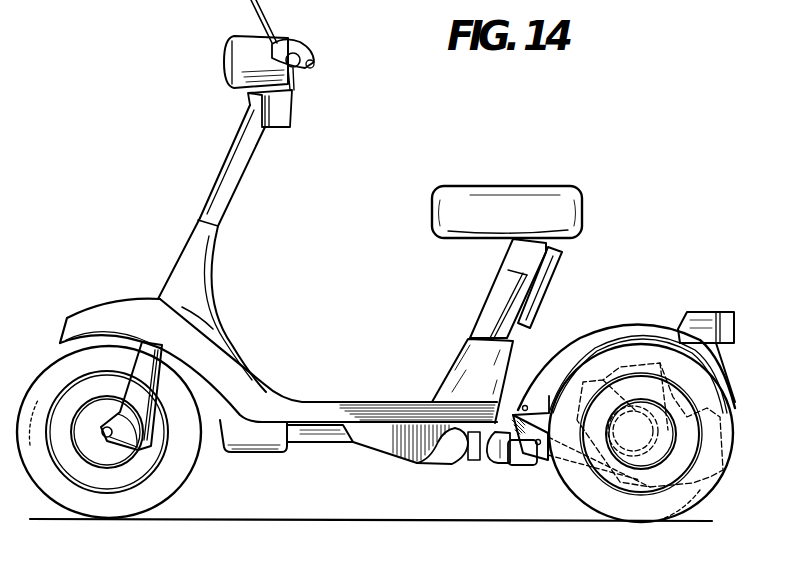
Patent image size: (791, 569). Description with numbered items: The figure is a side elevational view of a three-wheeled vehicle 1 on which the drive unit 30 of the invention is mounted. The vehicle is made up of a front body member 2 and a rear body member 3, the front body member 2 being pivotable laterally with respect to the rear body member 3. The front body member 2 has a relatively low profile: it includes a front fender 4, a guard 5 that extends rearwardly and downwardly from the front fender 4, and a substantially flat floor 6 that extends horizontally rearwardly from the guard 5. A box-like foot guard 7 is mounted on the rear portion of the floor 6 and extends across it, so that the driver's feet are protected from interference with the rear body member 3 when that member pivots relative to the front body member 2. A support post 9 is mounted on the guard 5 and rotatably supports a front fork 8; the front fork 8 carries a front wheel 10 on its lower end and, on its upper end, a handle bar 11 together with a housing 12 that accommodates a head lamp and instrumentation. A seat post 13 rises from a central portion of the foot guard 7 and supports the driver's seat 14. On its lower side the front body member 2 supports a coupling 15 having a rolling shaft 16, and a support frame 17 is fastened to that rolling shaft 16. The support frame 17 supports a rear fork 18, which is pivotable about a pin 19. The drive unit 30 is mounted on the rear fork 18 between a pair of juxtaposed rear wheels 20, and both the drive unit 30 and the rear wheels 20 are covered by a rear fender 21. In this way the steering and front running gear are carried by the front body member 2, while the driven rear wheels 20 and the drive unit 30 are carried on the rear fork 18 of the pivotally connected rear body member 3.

The three-wheeled vehicle 1 is at (170, 260).
The front body member 2 is at (268, 394).
The rear body member 3 is at (549, 313).
The front fender 4 is at (117, 305).
The guard 5 is at (218, 352).
The floor 6 is at (355, 402).
The foot guard 7 is at (458, 370).
The front fork 8 is at (138, 368).
The support post 9 is at (208, 253).
The front wheel 10 is at (82, 503).
The handle bar 11 is at (300, 58).
The housing 12 is at (238, 62).
The seat post 13 is at (500, 298).
The driver's seat 14 is at (505, 185).
The coupling 15 is at (432, 465).
The rolling shaft 16 is at (473, 462).
The support frame 17 is at (505, 466).
The rear fork 18 is at (525, 467).
The pin 19 is at (539, 445).
The rear wheels 20 is at (690, 492).
The rear fender 21 is at (607, 328).
The drive unit 30 is at (643, 370).